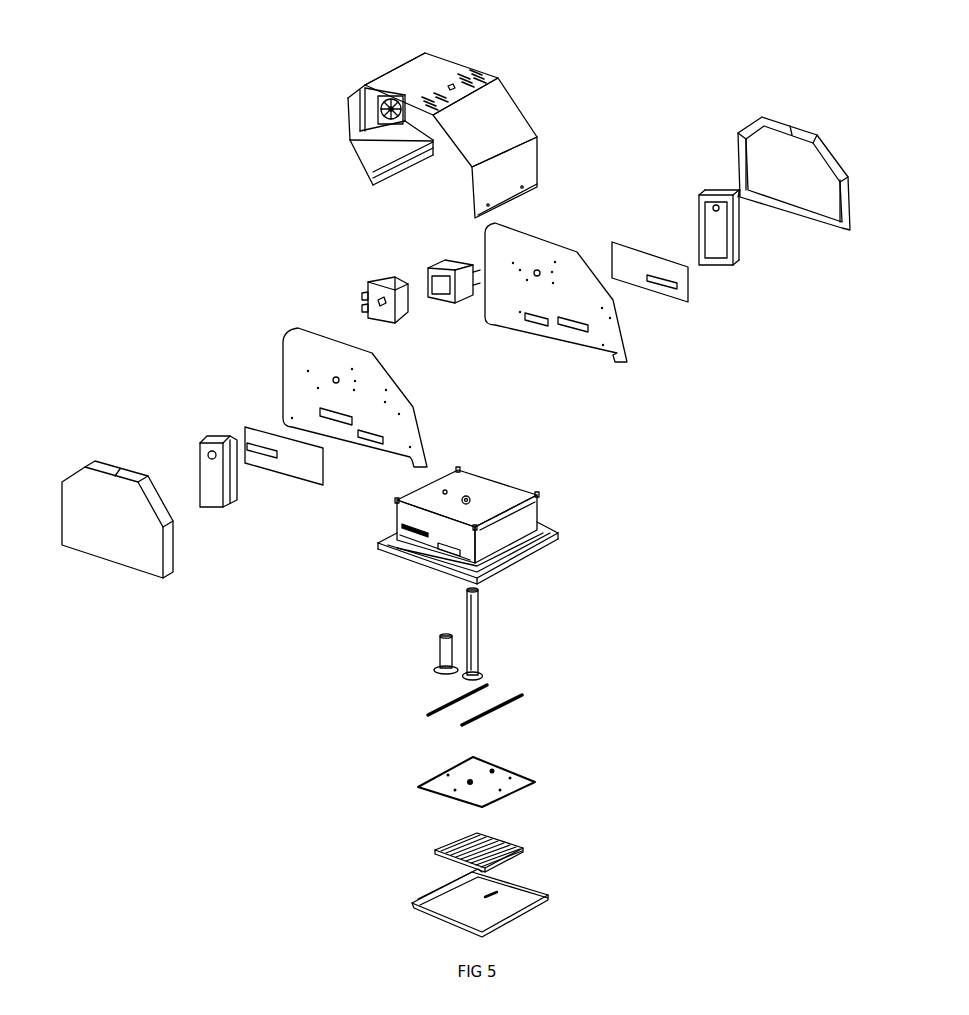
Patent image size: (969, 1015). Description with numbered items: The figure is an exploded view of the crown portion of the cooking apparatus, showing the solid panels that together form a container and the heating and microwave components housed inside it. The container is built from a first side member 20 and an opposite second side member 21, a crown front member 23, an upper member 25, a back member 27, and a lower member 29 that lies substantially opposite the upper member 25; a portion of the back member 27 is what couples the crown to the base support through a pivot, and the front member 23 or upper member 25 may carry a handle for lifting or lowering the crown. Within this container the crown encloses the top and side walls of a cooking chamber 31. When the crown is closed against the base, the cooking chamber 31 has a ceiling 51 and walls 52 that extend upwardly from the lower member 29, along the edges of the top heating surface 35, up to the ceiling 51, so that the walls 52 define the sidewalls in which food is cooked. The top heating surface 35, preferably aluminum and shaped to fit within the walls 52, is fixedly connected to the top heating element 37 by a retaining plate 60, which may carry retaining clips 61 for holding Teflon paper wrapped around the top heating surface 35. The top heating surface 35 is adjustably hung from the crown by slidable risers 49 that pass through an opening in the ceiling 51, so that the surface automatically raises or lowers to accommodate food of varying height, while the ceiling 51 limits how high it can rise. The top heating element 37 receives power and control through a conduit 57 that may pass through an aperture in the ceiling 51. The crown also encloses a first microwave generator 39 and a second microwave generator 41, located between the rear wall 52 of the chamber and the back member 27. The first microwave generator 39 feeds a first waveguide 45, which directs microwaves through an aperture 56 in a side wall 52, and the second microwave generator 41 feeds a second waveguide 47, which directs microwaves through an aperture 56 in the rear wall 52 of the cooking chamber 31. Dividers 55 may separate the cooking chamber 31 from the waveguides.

The first side member 20 is at (290, 336).
The second side member 21 is at (850, 200).
The crown front member 23 is at (533, 125).
The upper member 25 is at (410, 78).
The back member 27 is at (353, 122).
The lower member 29 is at (558, 545).
The cooking chamber 31 is at (378, 544).
The top heating surface 35 is at (548, 898).
The top heating element 37 is at (523, 848).
The first microwave generator 39 is at (368, 285).
The second microwave generator 41 is at (440, 265).
The first waveguide 45 is at (200, 445).
The second waveguide 47 is at (733, 245).
The slidable riser 49 is at (478, 660).
The ceiling 51 is at (500, 495).
The cooking chamber wall 52 is at (395, 515).
The divider 55 is at (690, 296).
The aperture 56 is at (415, 556).
The conduit 57 is at (438, 645).
The retaining plate 60 is at (535, 782).
The retaining clip 61 is at (425, 714).